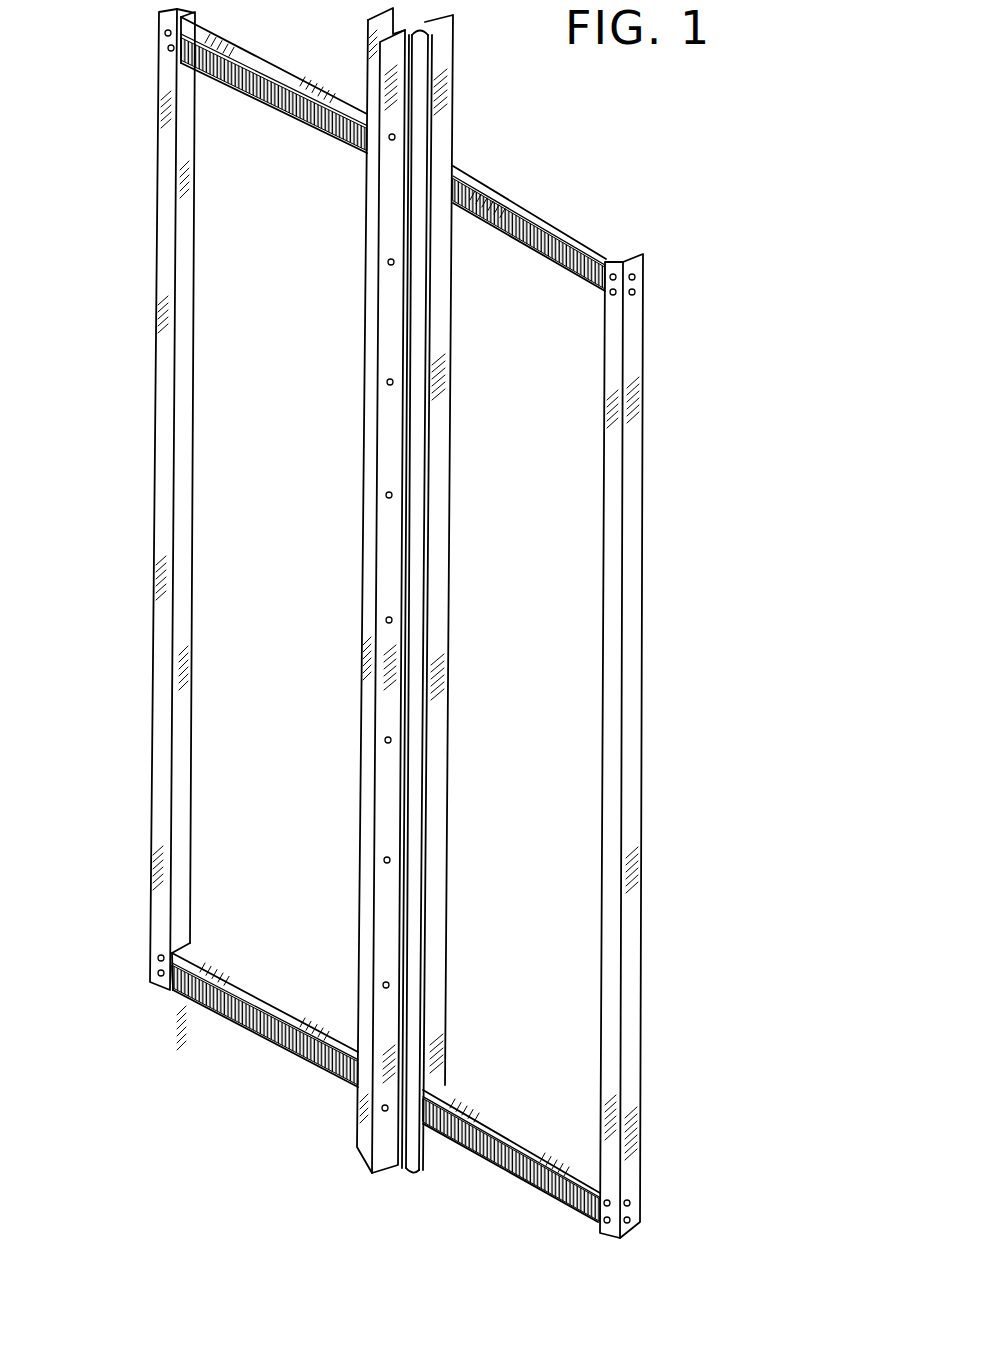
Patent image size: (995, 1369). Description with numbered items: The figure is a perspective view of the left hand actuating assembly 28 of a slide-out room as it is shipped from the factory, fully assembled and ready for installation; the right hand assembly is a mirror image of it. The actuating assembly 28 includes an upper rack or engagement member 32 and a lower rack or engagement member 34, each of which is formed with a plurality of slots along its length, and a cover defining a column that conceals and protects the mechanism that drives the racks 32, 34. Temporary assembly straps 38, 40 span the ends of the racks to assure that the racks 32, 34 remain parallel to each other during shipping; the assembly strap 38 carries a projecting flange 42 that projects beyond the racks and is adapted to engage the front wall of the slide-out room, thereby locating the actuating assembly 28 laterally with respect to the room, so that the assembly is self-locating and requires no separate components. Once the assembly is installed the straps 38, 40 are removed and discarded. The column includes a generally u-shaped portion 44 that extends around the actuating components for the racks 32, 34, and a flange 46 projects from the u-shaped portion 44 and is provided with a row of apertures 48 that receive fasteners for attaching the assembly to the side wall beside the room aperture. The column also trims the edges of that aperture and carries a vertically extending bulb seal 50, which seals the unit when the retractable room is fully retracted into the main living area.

The actuation assembly 28 is at (586, 140).
The upper rack or engagement member 32 is at (612, 255).
The lower rack or engagement member 34 is at (525, 1178).
The assembly strap 38 is at (639, 497).
The assembly strap 40 is at (167, 498).
The projecting flange 42 is at (645, 270).
The u-shaped portion 44 is at (447, 47).
The flange 46 is at (386, 438).
The apertures 48 is at (390, 621).
The bulb seal 50 is at (430, 397).